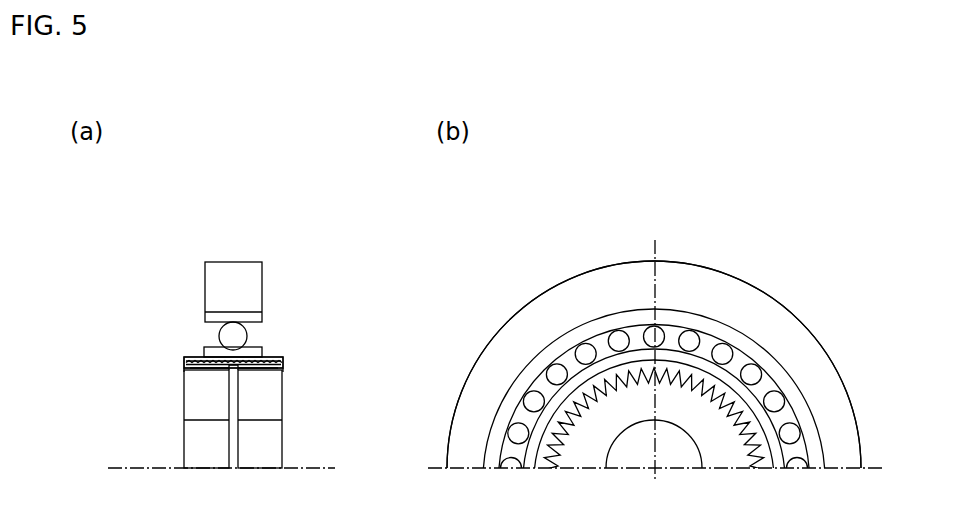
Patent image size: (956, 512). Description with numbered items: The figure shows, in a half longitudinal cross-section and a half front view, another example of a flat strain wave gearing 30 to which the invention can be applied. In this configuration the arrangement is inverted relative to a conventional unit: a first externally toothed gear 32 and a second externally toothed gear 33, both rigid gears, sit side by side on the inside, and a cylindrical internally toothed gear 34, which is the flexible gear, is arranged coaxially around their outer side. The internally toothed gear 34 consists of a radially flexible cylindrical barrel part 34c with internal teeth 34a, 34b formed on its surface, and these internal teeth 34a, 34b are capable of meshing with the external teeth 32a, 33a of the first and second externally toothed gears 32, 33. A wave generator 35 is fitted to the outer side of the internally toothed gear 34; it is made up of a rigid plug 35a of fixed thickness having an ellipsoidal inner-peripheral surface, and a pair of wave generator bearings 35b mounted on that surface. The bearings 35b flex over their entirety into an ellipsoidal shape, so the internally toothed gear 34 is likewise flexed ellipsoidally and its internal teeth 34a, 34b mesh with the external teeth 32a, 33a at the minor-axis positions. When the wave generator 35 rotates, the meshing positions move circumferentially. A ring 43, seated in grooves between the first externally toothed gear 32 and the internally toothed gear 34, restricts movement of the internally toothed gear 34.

The flat strain wave gearing 30 is at (100, 272).
The first externally toothed gear 32 is at (173, 388).
The external teeth 32a is at (182, 354).
The second externally toothed gear 33 is at (293, 389).
The external teeth 33a is at (288, 362).
The cylindrical internally toothed gear 34 is at (293, 353).
The internal teeth 34a is at (212, 368).
The internal teeth 34b is at (258, 368).
The cylindrical barrel part 34c is at (200, 357).
The wave generator 35 is at (270, 330).
The rigid plug 35a is at (203, 280).
The wave generator bearings 35b is at (212, 335).
The ring 43 is at (190, 373).